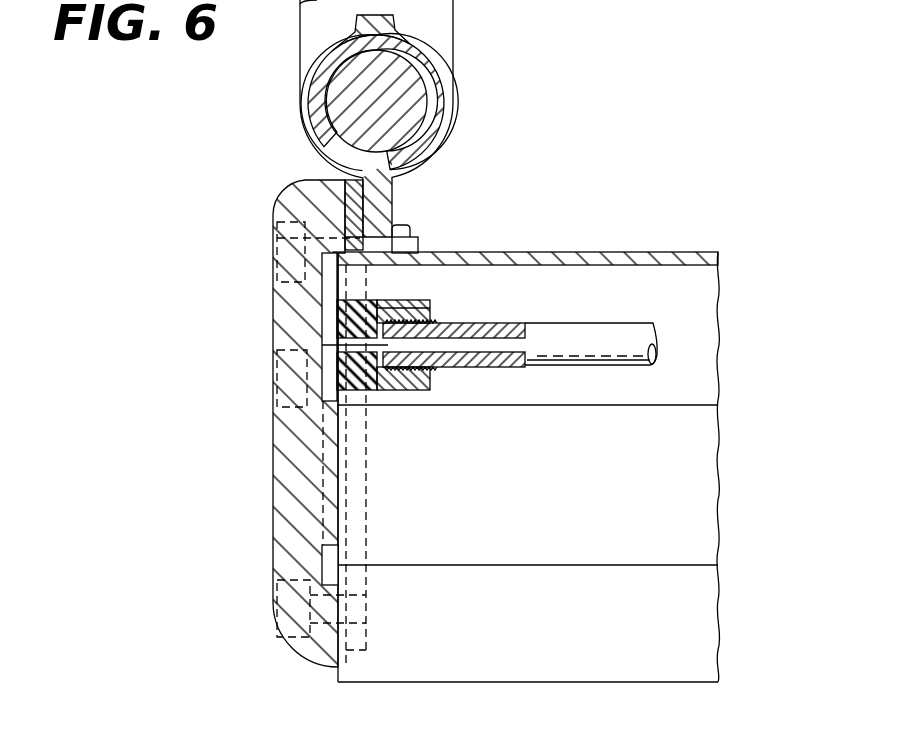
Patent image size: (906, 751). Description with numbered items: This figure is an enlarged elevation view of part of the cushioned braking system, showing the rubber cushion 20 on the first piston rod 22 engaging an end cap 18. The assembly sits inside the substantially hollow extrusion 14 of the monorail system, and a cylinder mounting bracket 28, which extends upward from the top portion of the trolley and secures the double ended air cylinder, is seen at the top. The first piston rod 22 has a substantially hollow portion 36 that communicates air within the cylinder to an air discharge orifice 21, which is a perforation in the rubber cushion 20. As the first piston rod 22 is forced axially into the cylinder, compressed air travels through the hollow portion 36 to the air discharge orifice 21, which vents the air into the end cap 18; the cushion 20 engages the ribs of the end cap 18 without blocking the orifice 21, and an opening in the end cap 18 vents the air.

The extrusion 14 is at (687, 603).
The end cap 18 is at (292, 550).
The rubber cushion 20 is at (433, 302).
The air discharge orifice 21 is at (345, 345).
The first piston rod 22 is at (592, 353).
The cylinder mounting bracket 28 is at (437, 122).
The substantially hollow portion 36 is at (518, 324).